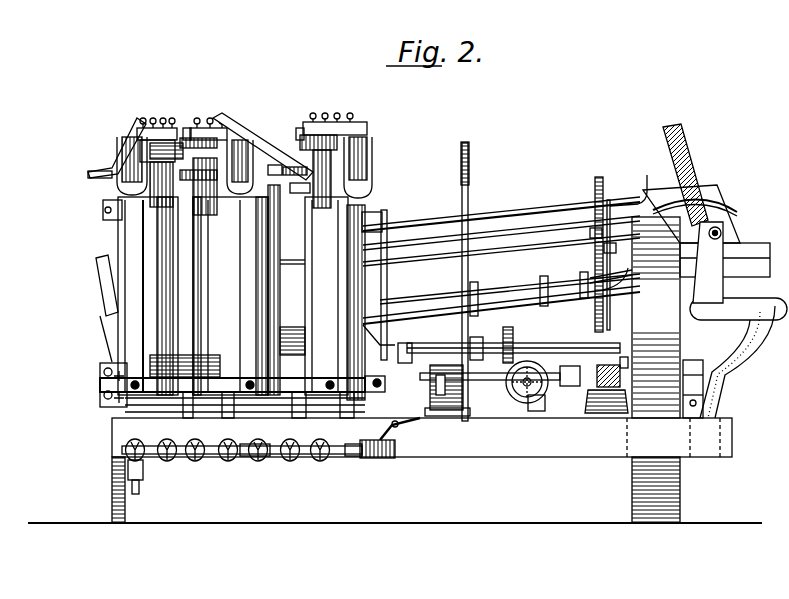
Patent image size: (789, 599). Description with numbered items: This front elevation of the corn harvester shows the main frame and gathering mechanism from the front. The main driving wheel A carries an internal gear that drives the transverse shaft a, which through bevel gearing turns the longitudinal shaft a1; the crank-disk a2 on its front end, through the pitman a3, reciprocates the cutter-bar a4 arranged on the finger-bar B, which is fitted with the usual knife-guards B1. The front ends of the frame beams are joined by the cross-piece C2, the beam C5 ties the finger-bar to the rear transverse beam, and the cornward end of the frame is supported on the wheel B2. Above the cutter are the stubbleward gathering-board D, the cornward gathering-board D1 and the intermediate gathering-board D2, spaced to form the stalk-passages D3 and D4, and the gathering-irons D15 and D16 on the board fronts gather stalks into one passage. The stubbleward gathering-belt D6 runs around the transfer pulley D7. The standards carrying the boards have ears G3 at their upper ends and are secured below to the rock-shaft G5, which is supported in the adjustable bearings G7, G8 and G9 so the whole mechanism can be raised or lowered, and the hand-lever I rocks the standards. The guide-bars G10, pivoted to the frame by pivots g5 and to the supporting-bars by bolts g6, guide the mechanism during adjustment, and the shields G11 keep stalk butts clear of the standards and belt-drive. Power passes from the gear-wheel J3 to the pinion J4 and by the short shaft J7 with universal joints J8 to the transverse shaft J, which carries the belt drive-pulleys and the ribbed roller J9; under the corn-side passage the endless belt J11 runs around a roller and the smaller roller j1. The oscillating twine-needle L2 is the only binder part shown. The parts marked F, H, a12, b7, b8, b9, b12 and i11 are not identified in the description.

The stalk-passage D4 is at (192, 128).
The gathering-iron D15 is at (250, 126).
The stalk-passage D3 is at (300, 128).
The cornward gathering-board D1 is at (162, 126).
The intermediate gathering-board D2 is at (218, 126).
The stubbleward gathering-board D is at (342, 124).
The intermediate or transfer pulley D7 is at (190, 181).
The stubbleward gathering-belt D6 is at (296, 192).
The finger F is at (272, 176).
The bolt a12 is at (150, 150).
The gathering-iron D16 is at (118, 150).
The bolt g6 is at (93, 176).
The guide-bar G10 is at (103, 209).
The transverse shaft a is at (337, 148).
The crank-disk a2 is at (366, 160).
The pitman a3 is at (372, 190).
The ears G3 is at (382, 222).
The hand-lever I is at (469, 197).
The inclined bed H is at (530, 205).
The oscillating twine-needle L2 is at (728, 208).
The rod b7 is at (594, 233).
The rod b8 is at (605, 248).
The link b9 is at (598, 276).
The pinion J4 is at (507, 300).
The shield G11 is at (241, 298).
The roller J9 is at (292, 327).
The transverse shaft J is at (390, 345).
The universal joint J8 is at (406, 340).
The short shaft J7 is at (423, 344).
The gear-wheel J3 is at (576, 343).
The main driving wheel A is at (656, 370).
The pivot b12 is at (629, 363).
The endless belt J11 is at (182, 376).
The pinion i11 is at (463, 392).
The bearing G9 is at (110, 414).
The smaller roller j1 is at (188, 400).
The finger-bar B is at (242, 441).
The rock-shaft G5 is at (298, 402).
The bearing G8 is at (378, 412).
The bearing G7 is at (456, 416).
The longitudinal shaft a1 is at (524, 403).
The cross-piece C2 is at (422, 437).
The wheel B2 is at (114, 470).
The knife-guards B1 is at (165, 460).
The cutter-bar a4 is at (255, 460).
The pivot g5 is at (352, 460).
The beam C5 is at (385, 460).